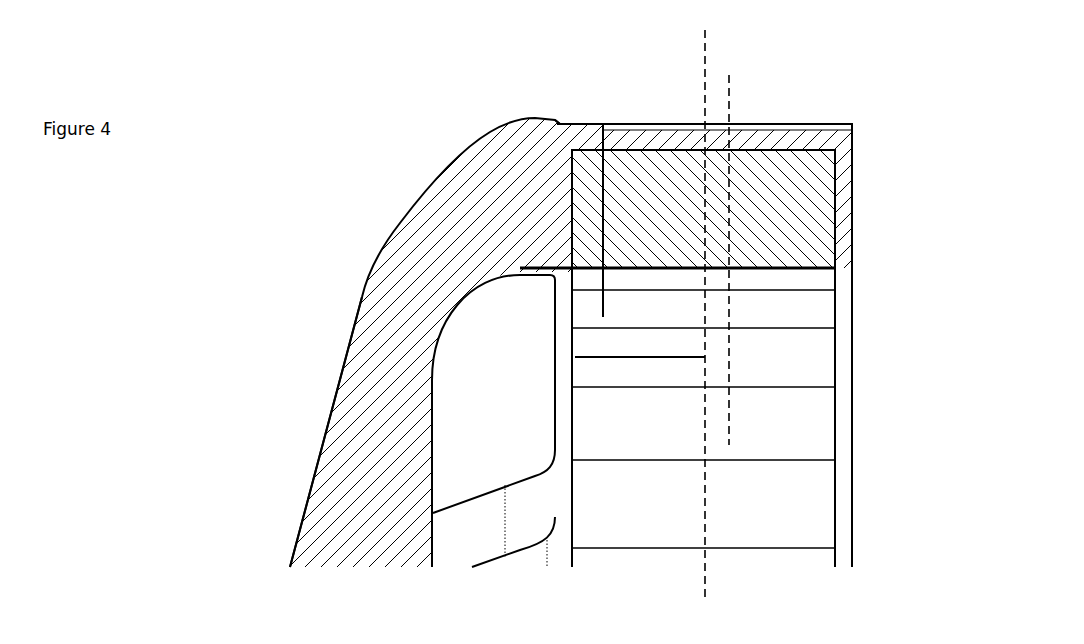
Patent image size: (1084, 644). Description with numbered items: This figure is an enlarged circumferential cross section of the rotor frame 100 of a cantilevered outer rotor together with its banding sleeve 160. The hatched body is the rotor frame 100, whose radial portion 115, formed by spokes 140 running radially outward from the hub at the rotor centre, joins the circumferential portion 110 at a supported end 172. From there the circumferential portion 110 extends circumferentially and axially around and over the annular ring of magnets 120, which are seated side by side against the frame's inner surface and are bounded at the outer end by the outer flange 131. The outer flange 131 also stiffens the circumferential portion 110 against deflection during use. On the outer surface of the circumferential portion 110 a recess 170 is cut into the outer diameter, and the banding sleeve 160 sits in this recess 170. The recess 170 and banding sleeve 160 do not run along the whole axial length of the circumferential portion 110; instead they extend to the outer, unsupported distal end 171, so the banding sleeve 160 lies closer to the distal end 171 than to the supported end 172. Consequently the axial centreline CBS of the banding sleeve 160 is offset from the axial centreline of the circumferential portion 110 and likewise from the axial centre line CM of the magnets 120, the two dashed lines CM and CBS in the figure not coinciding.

The rotor frame 100 is at (372, 100).
The circumferential portion 110 is at (866, 140).
The radial portion 115 is at (318, 458).
The spokes 140 is at (409, 421).
The magnets 120 is at (822, 212).
The outer flange 131 is at (846, 240).
The banding sleeve 160 is at (765, 122).
The recess 170 is at (625, 128).
The distal end 171 is at (853, 143).
The supported end 172 is at (557, 122).
The axial centre line of the magnets CM is at (710, 60).
The axial centreline of the banding sleeve CBS is at (731, 90).